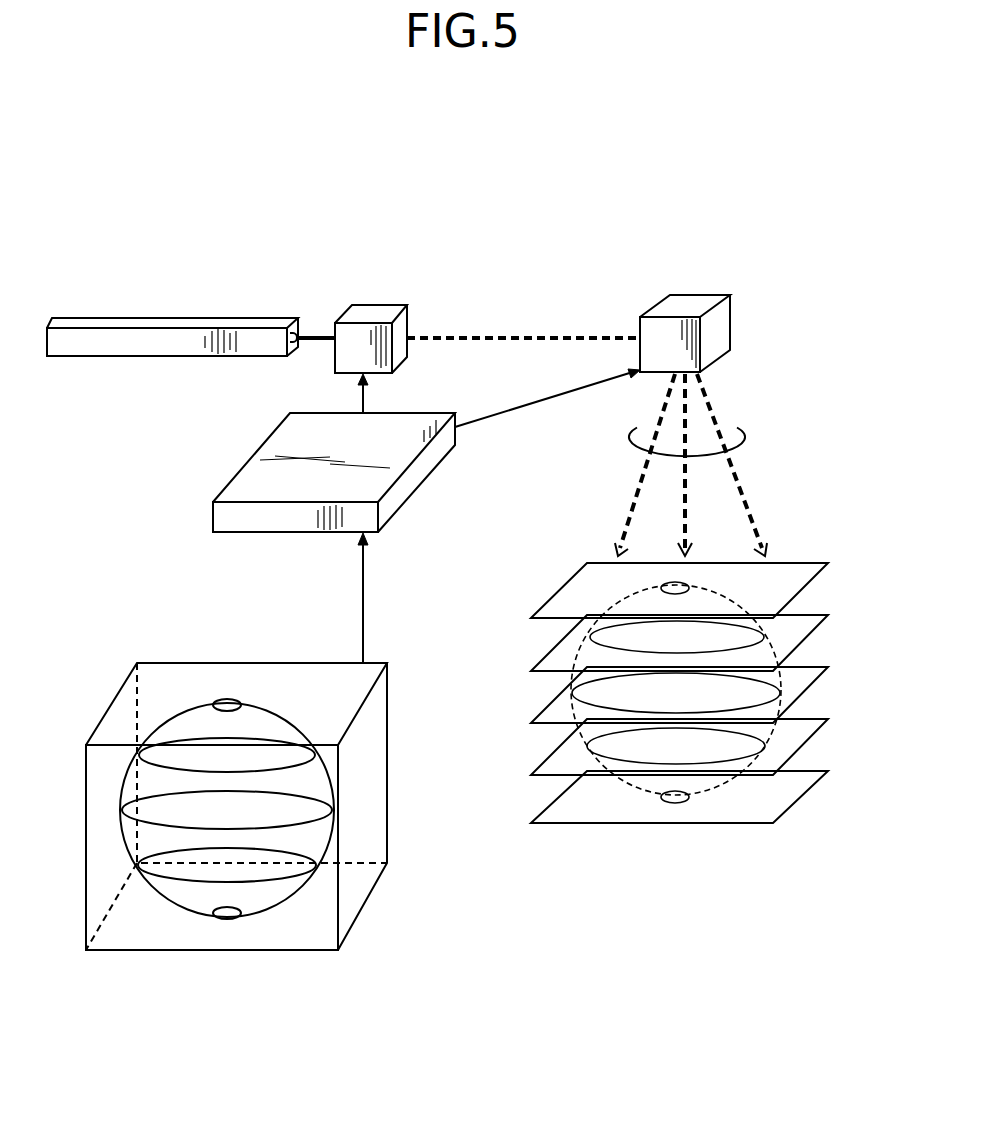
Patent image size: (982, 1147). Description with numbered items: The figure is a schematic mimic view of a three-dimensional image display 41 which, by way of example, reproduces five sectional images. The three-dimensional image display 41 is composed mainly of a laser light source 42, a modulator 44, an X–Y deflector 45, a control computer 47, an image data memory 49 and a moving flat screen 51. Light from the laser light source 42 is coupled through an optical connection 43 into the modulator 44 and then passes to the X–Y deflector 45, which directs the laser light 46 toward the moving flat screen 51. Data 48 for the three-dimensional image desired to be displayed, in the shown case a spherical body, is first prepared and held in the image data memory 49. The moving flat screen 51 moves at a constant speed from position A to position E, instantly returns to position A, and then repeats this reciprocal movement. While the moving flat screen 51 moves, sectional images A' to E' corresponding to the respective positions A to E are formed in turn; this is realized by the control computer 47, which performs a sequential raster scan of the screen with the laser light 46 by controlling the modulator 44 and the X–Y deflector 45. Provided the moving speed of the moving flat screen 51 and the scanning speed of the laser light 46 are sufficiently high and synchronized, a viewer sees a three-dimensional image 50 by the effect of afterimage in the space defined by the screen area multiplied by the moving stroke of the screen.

The three-dimensional image display 41 is at (523, 206).
The laser light source 42 is at (104, 322).
The optical fiber 43 is at (318, 333).
The modulator 44 is at (377, 305).
The X–Y deflector 45 is at (690, 297).
The laser light 46 is at (745, 432).
The control computer 47 is at (255, 460).
The data for a three-dimensional image 48 is at (197, 707).
The image data memory 49 is at (152, 932).
The three-dimensional image 50 is at (630, 790).
The moving flat screen 51 is at (750, 812).